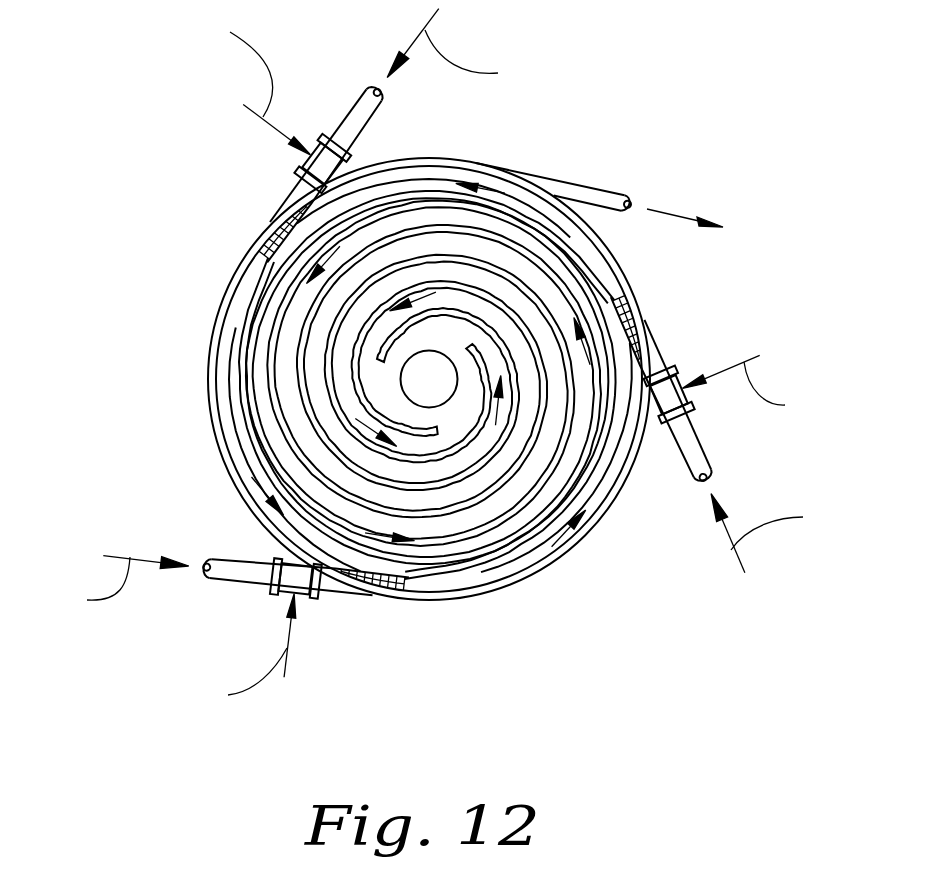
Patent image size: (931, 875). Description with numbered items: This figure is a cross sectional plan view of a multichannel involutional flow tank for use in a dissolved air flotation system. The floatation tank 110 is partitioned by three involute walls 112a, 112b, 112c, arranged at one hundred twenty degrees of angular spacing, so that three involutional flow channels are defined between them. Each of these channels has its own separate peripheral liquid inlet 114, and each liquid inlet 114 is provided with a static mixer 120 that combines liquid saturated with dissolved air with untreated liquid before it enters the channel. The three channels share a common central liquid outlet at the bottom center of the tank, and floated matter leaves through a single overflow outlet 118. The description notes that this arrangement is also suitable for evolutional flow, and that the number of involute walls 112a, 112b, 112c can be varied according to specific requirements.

The floatation tank 110 is at (568, 556).
The involute wall 112a is at (357, 362).
The involute wall 112b is at (327, 395).
The involute wall 112c is at (310, 427).
The peripheral liquid inlet 114 is at (298, 192).
The overflow outlet 118 is at (563, 187).
The static mixer 120 is at (262, 243).